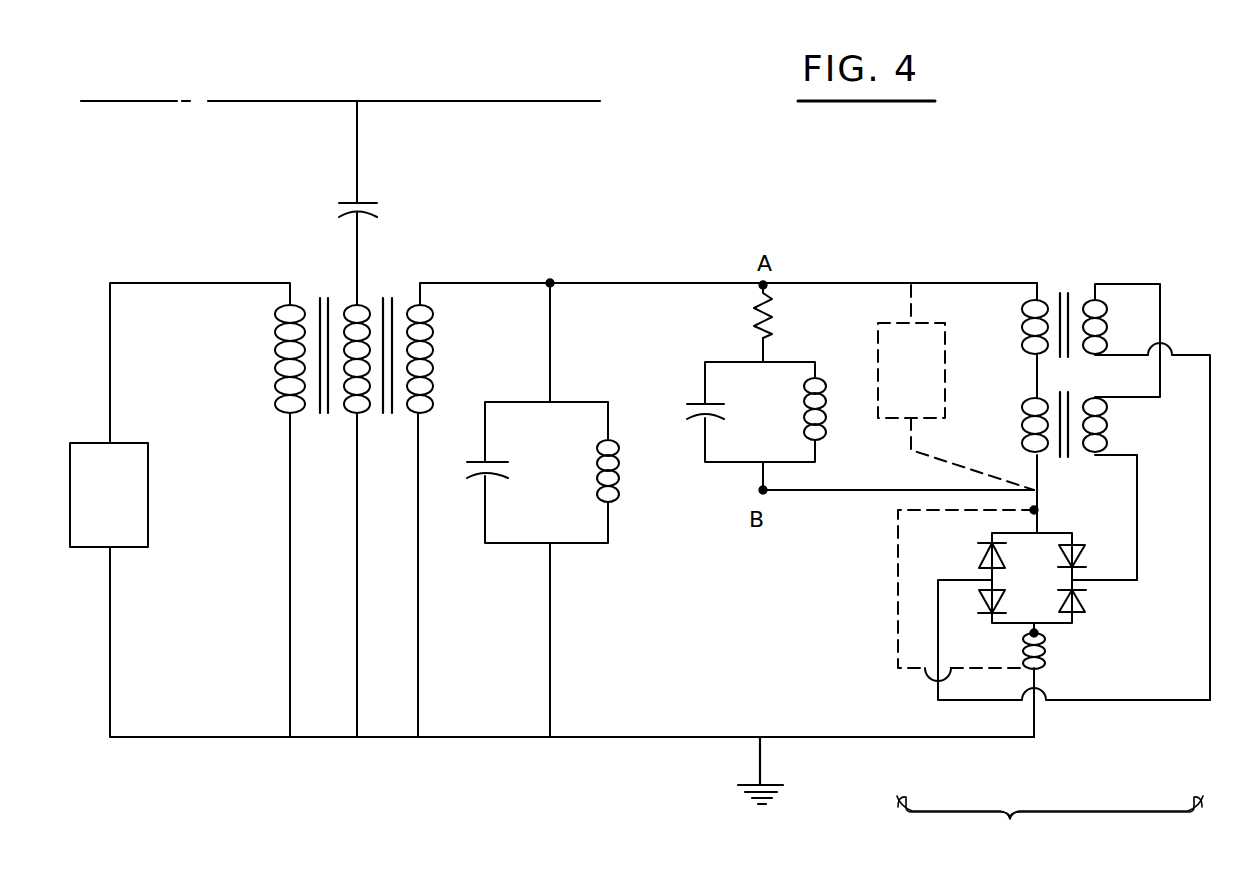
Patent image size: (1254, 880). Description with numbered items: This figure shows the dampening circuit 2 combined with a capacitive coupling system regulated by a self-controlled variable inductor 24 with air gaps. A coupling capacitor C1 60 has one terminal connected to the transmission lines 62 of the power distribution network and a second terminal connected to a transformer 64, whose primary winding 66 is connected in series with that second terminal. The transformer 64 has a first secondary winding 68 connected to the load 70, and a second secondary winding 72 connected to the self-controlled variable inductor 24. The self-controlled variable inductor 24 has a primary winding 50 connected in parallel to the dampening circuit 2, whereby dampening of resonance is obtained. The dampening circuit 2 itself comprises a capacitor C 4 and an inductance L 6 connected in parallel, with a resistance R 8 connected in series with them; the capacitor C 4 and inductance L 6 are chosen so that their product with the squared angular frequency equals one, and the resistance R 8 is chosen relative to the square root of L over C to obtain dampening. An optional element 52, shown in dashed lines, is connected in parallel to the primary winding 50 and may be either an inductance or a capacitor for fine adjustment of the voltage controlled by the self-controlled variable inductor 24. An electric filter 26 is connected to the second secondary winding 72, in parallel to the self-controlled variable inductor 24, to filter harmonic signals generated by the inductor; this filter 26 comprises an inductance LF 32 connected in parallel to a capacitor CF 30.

The dampening circuit 2 is at (758, 383).
The capacitor C 4 is at (700, 400).
The inductance L 6 is at (829, 402).
The resistance R 8 is at (752, 326).
The self-controlled variable inductor 24 is at (1053, 677).
The electric filter 26 is at (559, 536).
The capacitor C_F 30 is at (507, 452).
The inductance L_F 32 is at (622, 480).
The primary winding 50 is at (1006, 364).
The element 52 is at (895, 355).
The capacitor C₁ 60 is at (354, 203).
The transmission lines 62 is at (432, 101).
The transformer 64 is at (628, 471).
The primary winding 66 is at (370, 413).
The first secondary winding 68 is at (279, 341).
The load 70 is at (115, 501).
The second secondary winding 72 is at (435, 365).